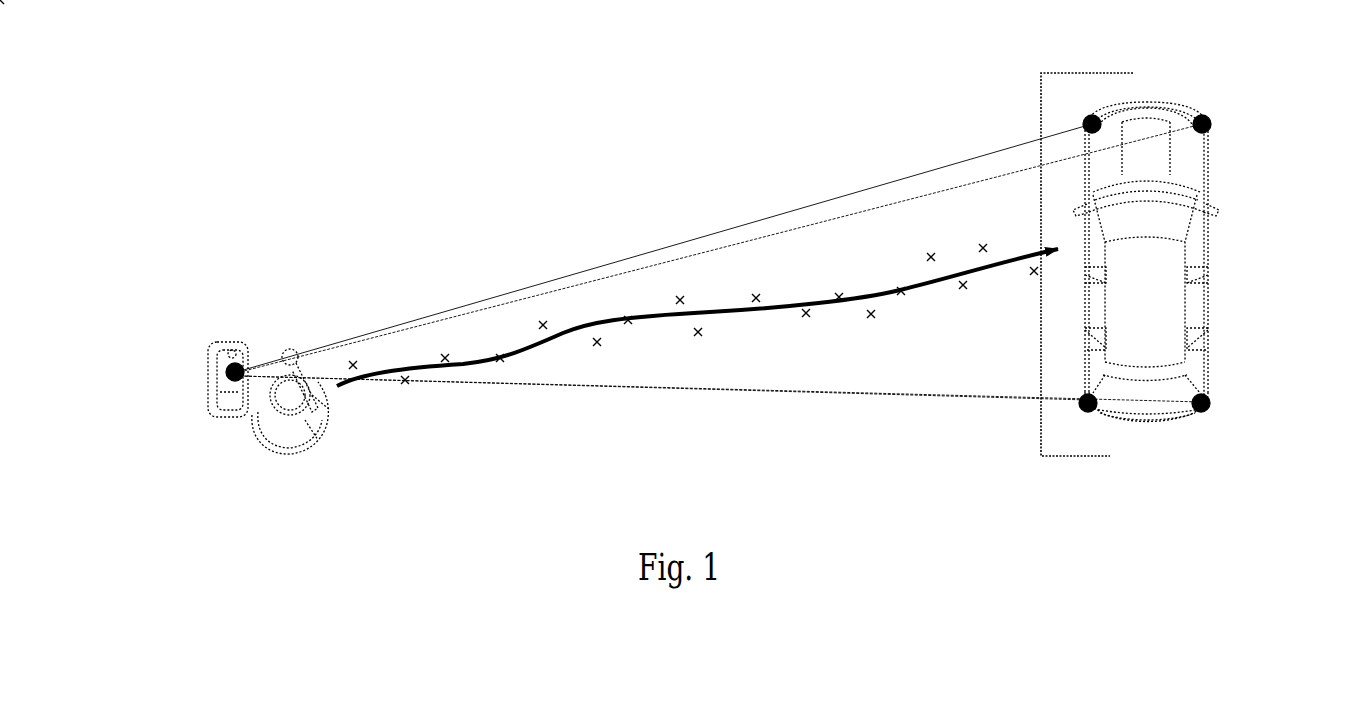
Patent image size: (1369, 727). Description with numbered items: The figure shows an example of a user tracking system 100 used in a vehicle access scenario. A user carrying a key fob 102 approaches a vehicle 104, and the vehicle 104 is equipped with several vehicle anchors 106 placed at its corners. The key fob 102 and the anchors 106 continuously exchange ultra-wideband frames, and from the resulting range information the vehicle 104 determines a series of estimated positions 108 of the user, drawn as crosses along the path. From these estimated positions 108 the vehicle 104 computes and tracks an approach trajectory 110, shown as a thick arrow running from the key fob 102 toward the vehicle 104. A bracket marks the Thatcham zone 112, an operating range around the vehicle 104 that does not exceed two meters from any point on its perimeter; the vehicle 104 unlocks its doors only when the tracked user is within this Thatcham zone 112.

The user tracking system 100 is at (284, 98).
The key fob 102 is at (227, 363).
The vehicle 104 is at (1162, 282).
The anchors 106 is at (1216, 122).
The estimated positions 108 is at (541, 309).
The approach trajectory 110 is at (866, 365).
The Thatcham zone 112 is at (992, 127).